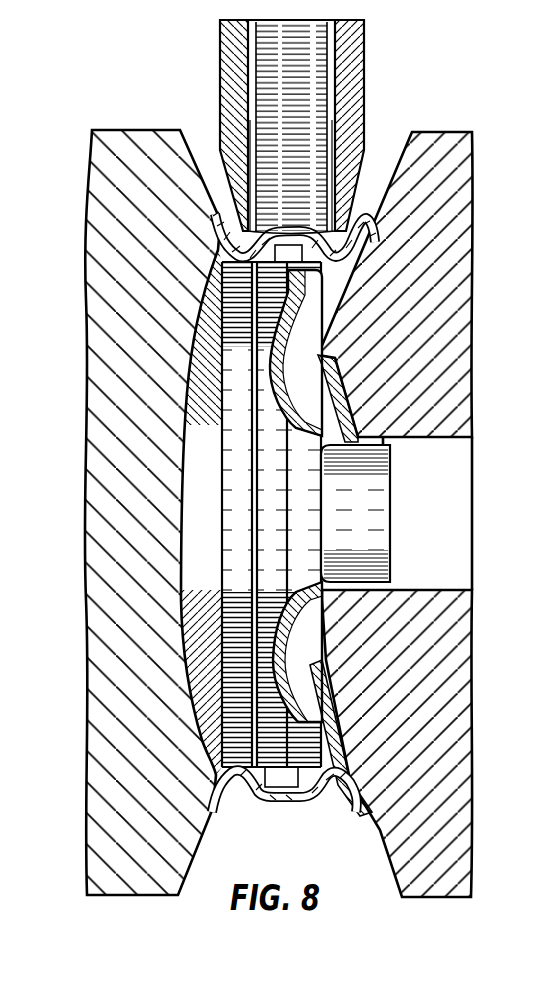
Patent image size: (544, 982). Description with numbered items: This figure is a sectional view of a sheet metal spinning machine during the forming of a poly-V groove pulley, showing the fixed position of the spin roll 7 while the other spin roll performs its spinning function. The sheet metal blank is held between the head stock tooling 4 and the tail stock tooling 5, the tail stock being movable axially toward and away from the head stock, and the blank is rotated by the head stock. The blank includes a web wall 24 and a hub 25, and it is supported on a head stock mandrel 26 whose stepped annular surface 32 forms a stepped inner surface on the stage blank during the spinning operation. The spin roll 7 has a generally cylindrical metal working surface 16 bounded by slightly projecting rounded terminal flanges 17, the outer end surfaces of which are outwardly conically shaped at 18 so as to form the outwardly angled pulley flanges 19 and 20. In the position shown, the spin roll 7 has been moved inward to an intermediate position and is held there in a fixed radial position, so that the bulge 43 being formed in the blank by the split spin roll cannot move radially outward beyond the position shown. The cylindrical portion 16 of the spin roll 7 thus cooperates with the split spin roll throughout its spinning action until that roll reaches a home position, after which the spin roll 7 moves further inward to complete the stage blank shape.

The head stock tooling 4 is at (118, 518).
The tail stock tooling 5 is at (440, 340).
The spin roll 7 is at (311, 125).
The cylindrical metal working surface 16 is at (270, 108).
The terminal flanges 17 is at (246, 128).
The outwardly conically shaped end surfaces 18 is at (355, 178).
The pulley flange 19 is at (216, 232).
The pulley flange 20 is at (372, 232).
The web wall 24 is at (326, 359).
The hub 25 is at (370, 588).
The head stock mandrel 26 is at (296, 659).
The stepped annular surface 32 is at (250, 503).
The bulge 43 is at (290, 219).